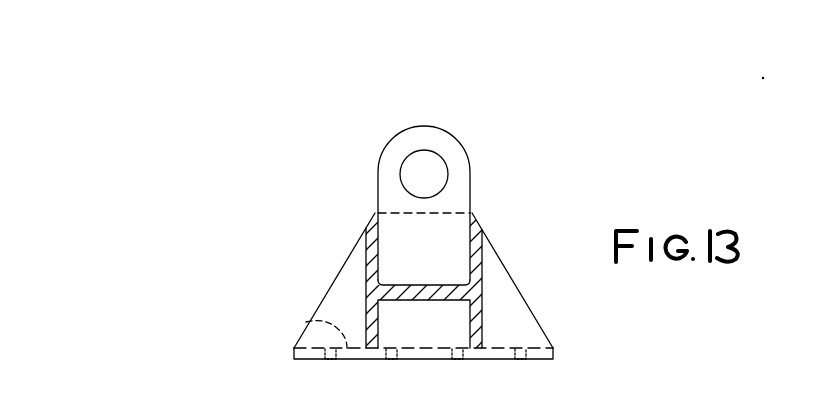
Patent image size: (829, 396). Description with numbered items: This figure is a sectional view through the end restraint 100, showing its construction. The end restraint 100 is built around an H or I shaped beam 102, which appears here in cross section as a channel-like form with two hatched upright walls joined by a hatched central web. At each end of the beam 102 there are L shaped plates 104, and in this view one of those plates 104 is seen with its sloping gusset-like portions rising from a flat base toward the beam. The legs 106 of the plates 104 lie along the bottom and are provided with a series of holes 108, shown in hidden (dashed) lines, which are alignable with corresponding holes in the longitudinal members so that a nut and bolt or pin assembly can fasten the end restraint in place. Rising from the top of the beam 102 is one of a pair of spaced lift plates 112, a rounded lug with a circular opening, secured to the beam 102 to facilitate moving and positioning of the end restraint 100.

The end restraint 100 is at (508, 159).
The H or I shaped beam 102 is at (492, 268).
The L shaped plates 104 is at (312, 295).
The legs 106 is at (306, 323).
The holes 108 is at (387, 362).
The lift plates 112 is at (457, 138).